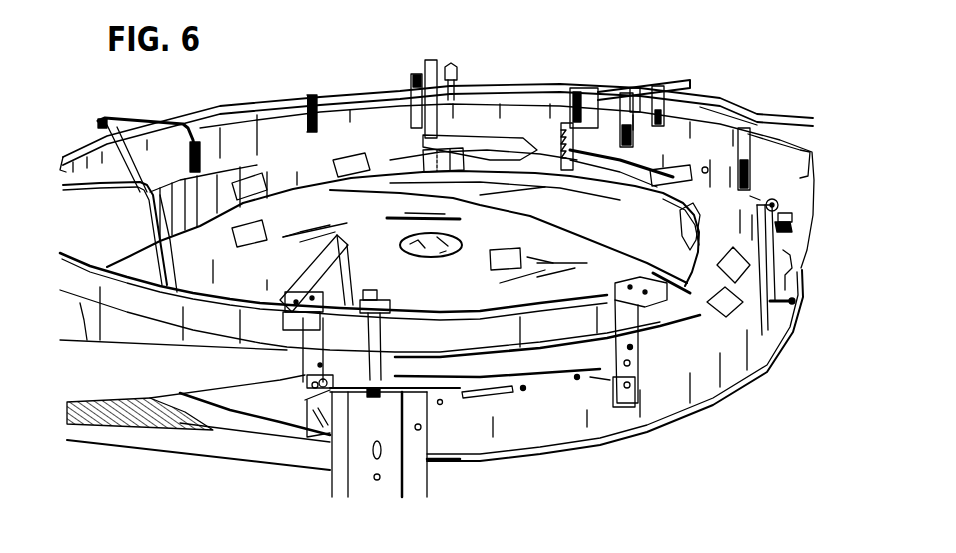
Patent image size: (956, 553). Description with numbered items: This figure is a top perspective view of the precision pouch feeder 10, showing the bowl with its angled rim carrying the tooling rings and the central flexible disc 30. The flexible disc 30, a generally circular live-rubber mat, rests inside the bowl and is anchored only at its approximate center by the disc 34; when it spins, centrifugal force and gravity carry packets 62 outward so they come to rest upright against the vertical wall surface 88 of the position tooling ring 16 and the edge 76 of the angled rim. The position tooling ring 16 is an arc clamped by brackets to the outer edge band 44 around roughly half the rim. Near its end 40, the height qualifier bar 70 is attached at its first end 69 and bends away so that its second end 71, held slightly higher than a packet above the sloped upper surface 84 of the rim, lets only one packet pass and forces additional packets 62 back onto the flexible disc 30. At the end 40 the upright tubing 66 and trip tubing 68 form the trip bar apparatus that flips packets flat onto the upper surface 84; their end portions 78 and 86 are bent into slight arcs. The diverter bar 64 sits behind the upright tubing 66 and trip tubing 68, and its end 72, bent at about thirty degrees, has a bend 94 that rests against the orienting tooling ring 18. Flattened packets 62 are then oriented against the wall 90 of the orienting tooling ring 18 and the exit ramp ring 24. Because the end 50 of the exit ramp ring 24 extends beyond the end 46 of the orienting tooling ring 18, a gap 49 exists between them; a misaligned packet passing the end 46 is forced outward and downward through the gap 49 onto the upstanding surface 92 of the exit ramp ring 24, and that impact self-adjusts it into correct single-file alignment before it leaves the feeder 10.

The precision pouch feeder 10 is at (437, 201).
The position tooling ring 16 is at (436, 123).
The orienting tooling ring 18 is at (692, 177).
The exit ramp ring 24 is at (449, 352).
The flexible disc 30 is at (435, 248).
The disc 34 is at (448, 240).
The end of position tooling ring 40 is at (508, 216).
The outer edge band 44 is at (410, 241).
The end of orienting tooling ring 46 is at (766, 195).
The gap 49 is at (798, 206).
The end of exit ramp ring 50 is at (800, 270).
The packet 62 is at (491, 221).
The diverter bar 64 is at (406, 207).
The upright tubing 66 is at (625, 111).
The trip tubing 68 is at (655, 222).
The first end of height qualifier bar 69 is at (420, 159).
The height qualifier bar 70 is at (474, 106).
The second end of height qualifier bar 71 is at (512, 194).
The end of diverter bar 72 is at (688, 180).
The edge of angled rim 76 is at (333, 207).
The end portion of upright tubing 78 is at (621, 140).
The upper surface of angled rim 84 is at (120, 237).
The end portion of trip tubing 86 is at (698, 227).
The vertical wall surface 88 is at (207, 125).
The wall of orienting tooling ring 90 is at (742, 148).
The upstanding surface of exit ramp ring 92 is at (807, 277).
The bend 94 is at (717, 155).